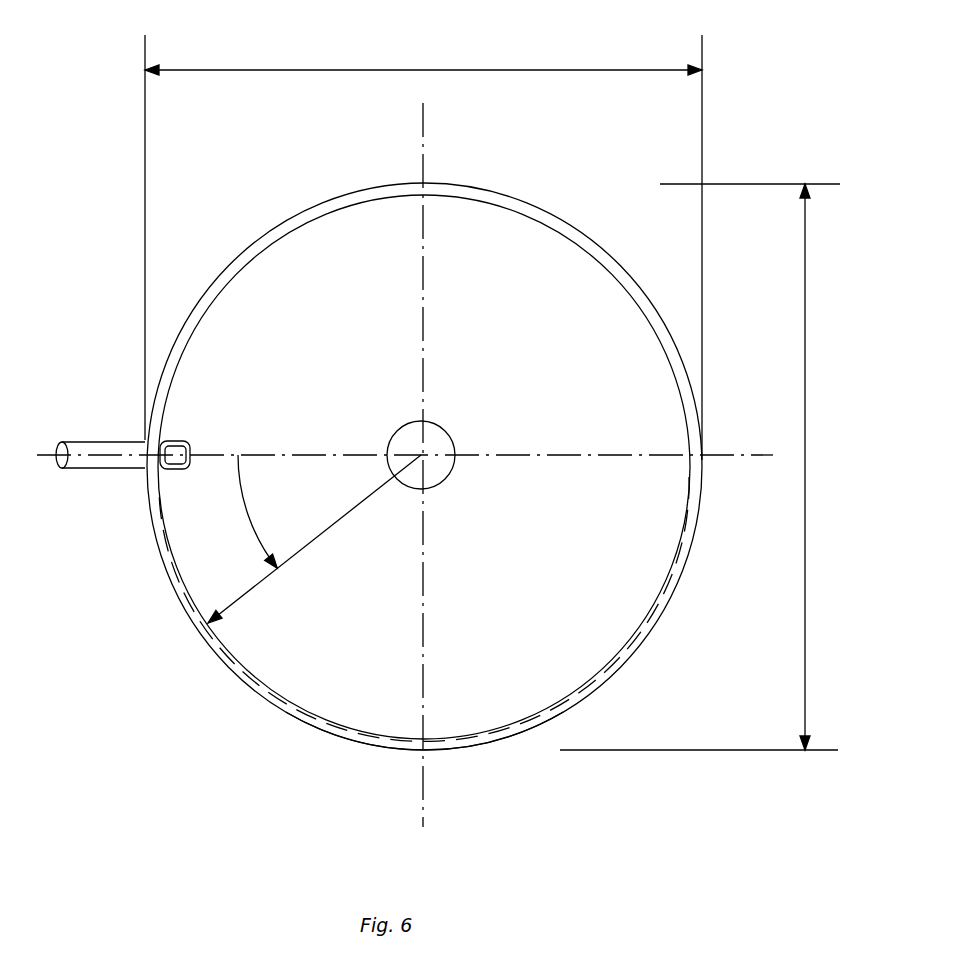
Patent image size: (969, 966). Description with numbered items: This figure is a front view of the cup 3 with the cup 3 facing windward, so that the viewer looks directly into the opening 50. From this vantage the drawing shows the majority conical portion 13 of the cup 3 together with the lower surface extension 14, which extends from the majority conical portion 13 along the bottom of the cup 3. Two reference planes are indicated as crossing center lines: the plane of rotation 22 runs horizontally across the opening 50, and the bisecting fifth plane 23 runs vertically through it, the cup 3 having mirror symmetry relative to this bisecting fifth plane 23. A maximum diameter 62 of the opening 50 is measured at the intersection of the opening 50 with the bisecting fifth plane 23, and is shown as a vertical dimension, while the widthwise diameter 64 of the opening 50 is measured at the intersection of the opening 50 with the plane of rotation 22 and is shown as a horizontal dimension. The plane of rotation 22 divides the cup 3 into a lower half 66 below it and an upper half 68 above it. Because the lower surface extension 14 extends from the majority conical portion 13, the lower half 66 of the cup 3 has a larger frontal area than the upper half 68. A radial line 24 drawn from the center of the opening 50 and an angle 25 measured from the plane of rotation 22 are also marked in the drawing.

The cup 3 is at (307, 347).
The majority conical portion 13 is at (524, 639).
The lower surface extension 14 is at (513, 708).
The plane of rotation 22 is at (578, 455).
The bisecting fifth plane 23 is at (424, 166).
The radius 24 is at (332, 527).
The angle 25 is at (248, 520).
The opening 50 is at (698, 446).
The maximum diameter 62 is at (806, 537).
The widthwise diameter 64 is at (458, 70).
The lower half 66 is at (600, 534).
The upper half 68 is at (554, 347).